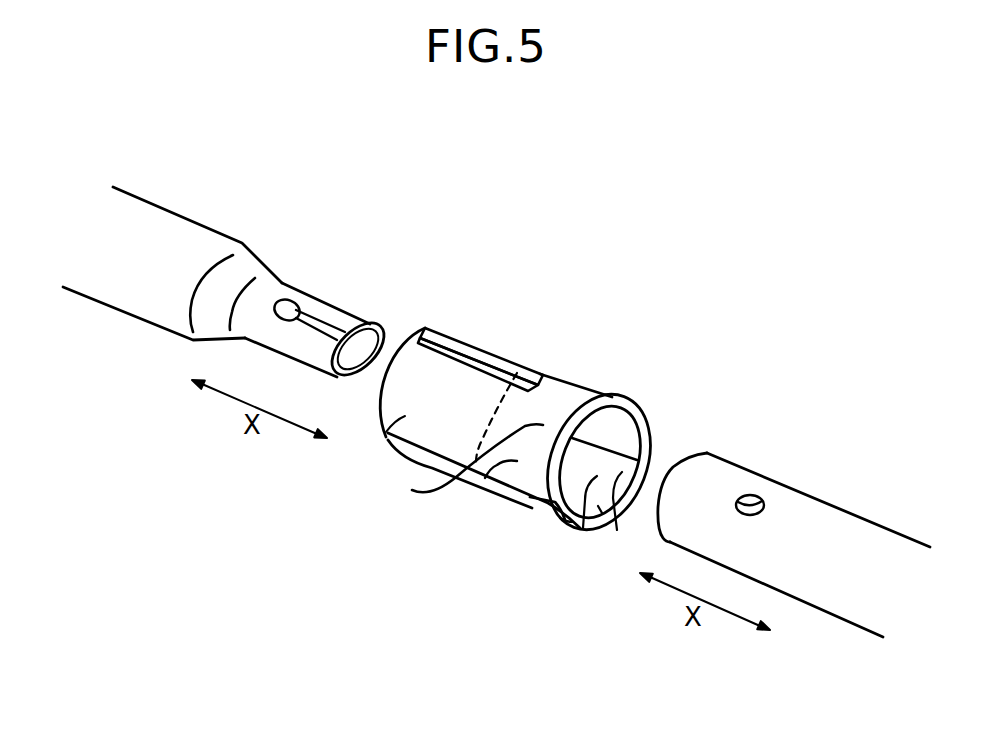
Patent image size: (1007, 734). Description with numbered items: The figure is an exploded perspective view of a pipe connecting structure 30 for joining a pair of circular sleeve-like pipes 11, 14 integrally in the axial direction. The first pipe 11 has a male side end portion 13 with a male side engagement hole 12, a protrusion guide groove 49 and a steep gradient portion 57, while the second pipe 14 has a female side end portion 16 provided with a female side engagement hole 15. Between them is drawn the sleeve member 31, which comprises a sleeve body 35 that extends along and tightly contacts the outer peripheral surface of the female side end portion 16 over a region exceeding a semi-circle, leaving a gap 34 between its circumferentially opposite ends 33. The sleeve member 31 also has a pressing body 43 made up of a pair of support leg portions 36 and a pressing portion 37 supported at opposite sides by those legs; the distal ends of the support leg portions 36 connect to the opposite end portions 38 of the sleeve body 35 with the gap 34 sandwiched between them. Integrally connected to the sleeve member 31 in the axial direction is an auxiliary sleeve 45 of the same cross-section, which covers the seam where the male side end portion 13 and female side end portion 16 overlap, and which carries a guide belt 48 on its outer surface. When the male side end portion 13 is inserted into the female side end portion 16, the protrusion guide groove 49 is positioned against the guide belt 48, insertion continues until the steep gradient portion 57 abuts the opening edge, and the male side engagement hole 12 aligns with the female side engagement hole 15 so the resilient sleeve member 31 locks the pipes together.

The circular sleeve-like pipe 11 is at (152, 237).
The steep gradient portion 57 is at (232, 275).
The male side engagement hole 12 is at (287, 300).
The male side end portion 13 is at (317, 310).
The protrusion guide groove 49 is at (327, 327).
The pipe connecting structure 30 is at (576, 232).
The sleeve member 31 is at (591, 366).
The guide belt 48 is at (468, 348).
The opposite ends 33 is at (655, 466).
The auxiliary sleeve 45 is at (413, 412).
The sleeve body 35 is at (412, 490).
The opposite end portions 38 is at (485, 478).
The support leg portions 36 is at (513, 493).
The pressing portion 37 is at (562, 525).
The gap 34 is at (583, 530).
The pressing body 43 is at (603, 514).
The circular sleeve-like pipe 14 is at (870, 560).
The female side end portion 16 is at (802, 523).
The female side engagement hole 15 is at (748, 495).